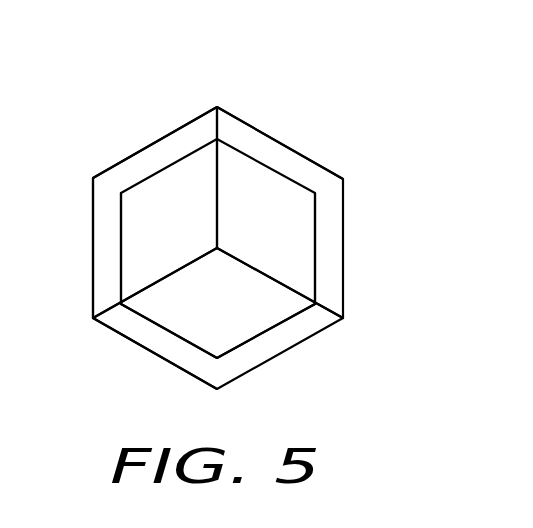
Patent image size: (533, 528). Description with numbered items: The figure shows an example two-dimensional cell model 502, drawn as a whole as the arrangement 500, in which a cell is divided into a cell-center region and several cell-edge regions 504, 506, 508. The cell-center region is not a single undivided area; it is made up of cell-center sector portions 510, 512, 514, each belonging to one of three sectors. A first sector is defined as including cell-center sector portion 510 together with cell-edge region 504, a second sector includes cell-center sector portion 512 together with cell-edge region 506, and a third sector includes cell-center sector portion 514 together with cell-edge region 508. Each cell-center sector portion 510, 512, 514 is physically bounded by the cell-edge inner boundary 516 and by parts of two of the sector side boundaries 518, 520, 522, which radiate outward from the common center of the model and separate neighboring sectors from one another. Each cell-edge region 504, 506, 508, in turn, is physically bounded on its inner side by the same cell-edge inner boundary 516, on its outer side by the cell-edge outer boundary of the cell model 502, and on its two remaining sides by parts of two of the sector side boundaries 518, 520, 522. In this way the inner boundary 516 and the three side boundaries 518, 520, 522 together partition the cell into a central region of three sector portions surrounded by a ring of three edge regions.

The cube corner reflector assembly 500 is at (283, 65).
The two-dimensional cell model 502 is at (162, 133).
The cell-edge region 504 is at (107, 213).
The cell-edge region 506 is at (270, 152).
The cell-edge region 508 is at (153, 343).
The cell-center sector portion 510 is at (140, 247).
The cell-center sector portion 512 is at (280, 217).
The cell-center sector portion 514 is at (238, 307).
The cell-edge inner boundary 516 is at (188, 343).
The sector side boundary 518 is at (285, 282).
The sector side boundary 520 is at (157, 283).
The sector side boundary 522 is at (216, 161).